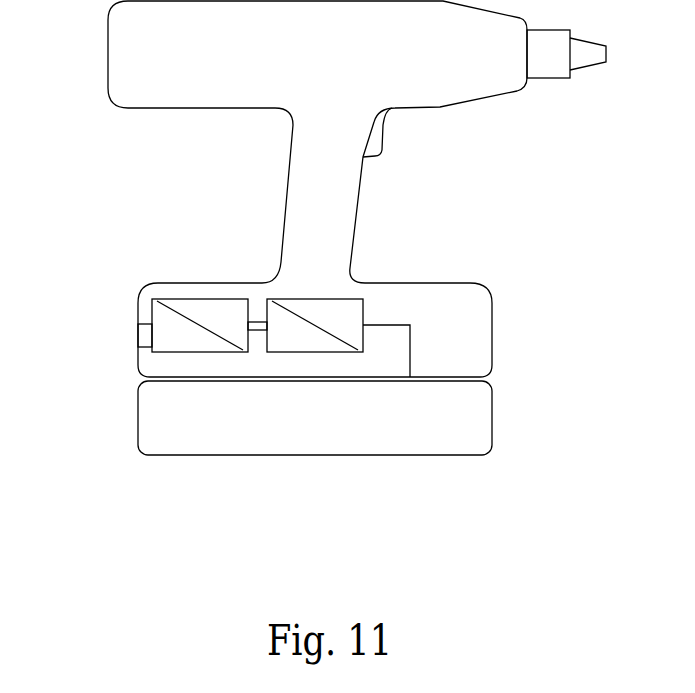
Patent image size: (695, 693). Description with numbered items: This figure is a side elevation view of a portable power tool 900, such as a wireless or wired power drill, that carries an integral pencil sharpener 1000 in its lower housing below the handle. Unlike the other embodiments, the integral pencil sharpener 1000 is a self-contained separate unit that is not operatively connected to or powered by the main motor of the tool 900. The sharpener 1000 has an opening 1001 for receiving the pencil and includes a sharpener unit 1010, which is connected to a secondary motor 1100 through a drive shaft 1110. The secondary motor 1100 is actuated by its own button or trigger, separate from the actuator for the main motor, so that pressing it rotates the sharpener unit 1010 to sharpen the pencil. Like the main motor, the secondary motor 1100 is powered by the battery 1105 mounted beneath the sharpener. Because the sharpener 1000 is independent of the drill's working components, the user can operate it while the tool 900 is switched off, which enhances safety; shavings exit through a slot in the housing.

The tool 900 is at (587, 84).
The integral pencil sharpener 1000 is at (114, 261).
The opening 1001 is at (138, 332).
The sharpener unit 1010 is at (170, 352).
The secondary motor 1100 is at (337, 298).
The battery 1105 is at (340, 430).
The drive shaft 1110 is at (263, 318).